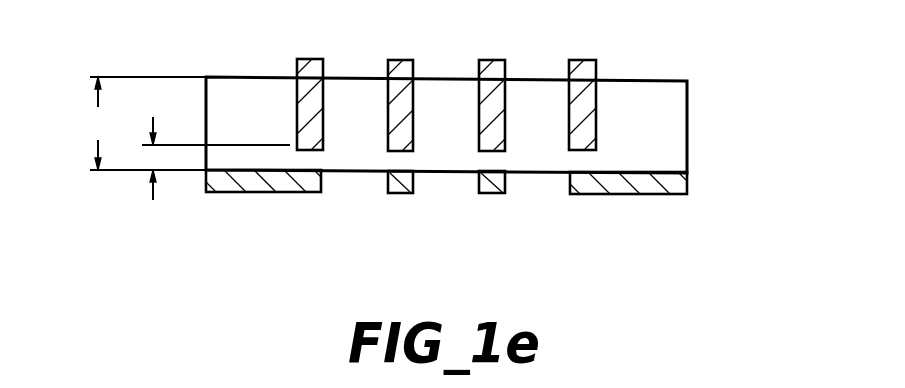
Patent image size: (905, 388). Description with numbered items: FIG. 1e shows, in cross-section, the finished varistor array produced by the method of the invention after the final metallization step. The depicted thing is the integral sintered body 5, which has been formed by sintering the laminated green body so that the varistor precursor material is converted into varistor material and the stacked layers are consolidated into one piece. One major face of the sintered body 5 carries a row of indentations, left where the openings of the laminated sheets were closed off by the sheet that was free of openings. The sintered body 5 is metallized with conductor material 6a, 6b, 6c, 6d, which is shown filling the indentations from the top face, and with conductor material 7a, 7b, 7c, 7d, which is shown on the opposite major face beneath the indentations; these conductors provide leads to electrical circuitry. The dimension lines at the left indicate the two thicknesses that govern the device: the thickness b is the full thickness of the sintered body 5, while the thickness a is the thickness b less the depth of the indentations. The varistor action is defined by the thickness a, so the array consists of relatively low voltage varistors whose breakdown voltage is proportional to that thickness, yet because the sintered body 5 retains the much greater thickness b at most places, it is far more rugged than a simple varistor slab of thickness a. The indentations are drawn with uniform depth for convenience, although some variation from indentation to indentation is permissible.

The sintered body 5 is at (692, 140).
The conductor material 6a is at (311, 66).
The conductor material 6b is at (400, 66).
The conductor material 6c is at (490, 66).
The conductor material 6d is at (582, 66).
The conductor material 7a is at (275, 183).
The conductor material 7b is at (400, 188).
The conductor material 7c is at (490, 188).
The conductor material 7d is at (608, 194).
The thickness a is at (216, 158).
The thickness b is at (148, 123).